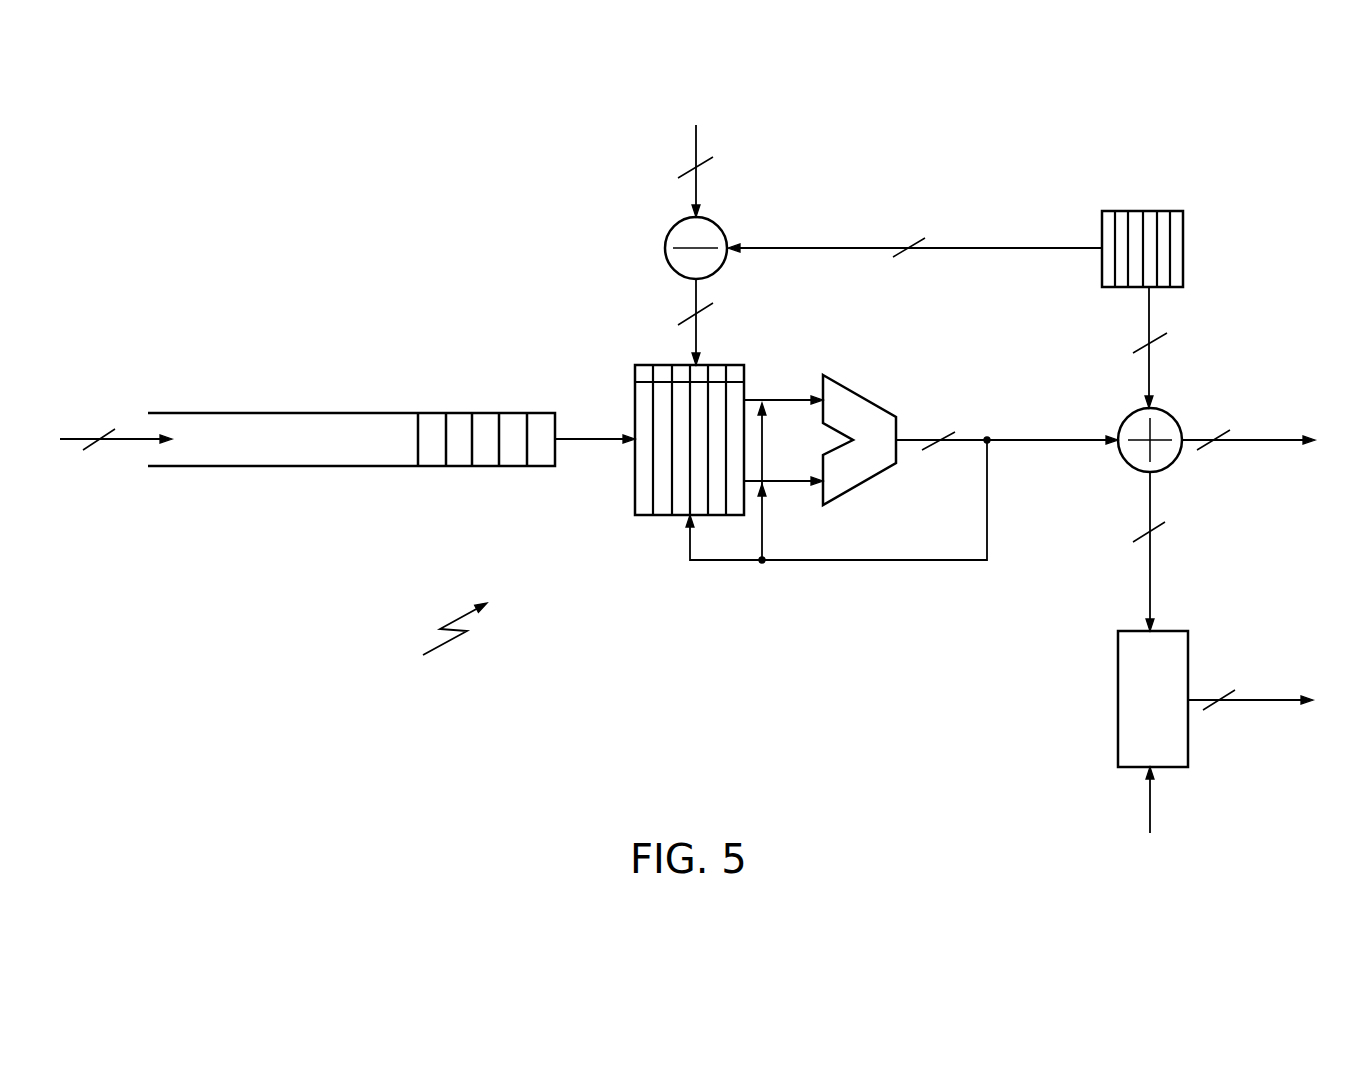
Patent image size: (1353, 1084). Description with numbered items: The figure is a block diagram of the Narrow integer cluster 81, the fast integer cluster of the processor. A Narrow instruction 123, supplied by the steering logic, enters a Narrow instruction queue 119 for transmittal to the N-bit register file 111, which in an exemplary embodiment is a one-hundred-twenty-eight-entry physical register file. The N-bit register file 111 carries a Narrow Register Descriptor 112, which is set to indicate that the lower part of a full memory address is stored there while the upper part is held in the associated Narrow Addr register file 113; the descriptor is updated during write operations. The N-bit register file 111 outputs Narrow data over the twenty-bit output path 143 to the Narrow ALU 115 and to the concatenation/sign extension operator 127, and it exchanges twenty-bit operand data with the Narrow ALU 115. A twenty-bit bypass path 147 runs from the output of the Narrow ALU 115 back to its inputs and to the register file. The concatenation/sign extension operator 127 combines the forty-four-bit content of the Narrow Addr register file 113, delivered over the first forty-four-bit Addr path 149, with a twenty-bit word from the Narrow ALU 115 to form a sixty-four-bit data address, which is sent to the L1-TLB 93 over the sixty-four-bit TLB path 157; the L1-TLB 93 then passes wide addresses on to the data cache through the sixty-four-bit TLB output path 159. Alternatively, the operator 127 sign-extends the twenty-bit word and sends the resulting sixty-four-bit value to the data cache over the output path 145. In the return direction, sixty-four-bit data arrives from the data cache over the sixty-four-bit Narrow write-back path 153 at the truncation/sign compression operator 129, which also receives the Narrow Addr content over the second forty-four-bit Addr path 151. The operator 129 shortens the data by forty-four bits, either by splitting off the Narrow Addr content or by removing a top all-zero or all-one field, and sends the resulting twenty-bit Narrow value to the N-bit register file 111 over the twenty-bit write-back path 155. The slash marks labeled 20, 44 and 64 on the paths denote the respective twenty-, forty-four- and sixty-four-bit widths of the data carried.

The air stream 20 is at (527, 388).
The fuel stream 44 is at (1040, 304).
The exhaust / combustion gas stream 64 is at (966, 443).
The Narrow integer cluster 81 is at (438, 638).
The L1-TLB 93 is at (1134, 713).
The N-bit register file 111 is at (663, 517).
The Narrow Register Descriptor 112 is at (632, 372).
The Narrow Addr register file 113 is at (1183, 230).
The Narrow ALU 115 is at (860, 393).
The Narrow instruction queue 119 is at (278, 412).
The Narrow instruction 123 is at (72, 437).
The concatenation/sign extension operator 127 is at (1175, 416).
The truncation/sign compression operator 129 is at (665, 237).
The 20-bit output path 143 is at (1040, 438).
The output path 145 is at (1280, 443).
The 20-bit bypass path 147 is at (870, 562).
The first 44-bit Addr path 149 is at (1147, 308).
The second 44-bit Addr path 151 is at (797, 246).
The 64-bit Narrow write-back path 153 is at (695, 143).
The 20-bit write-back path 155 is at (690, 291).
The 64-bit TLB path 157 is at (1150, 590).
The 64-bit TLB output path 159 is at (1280, 703).